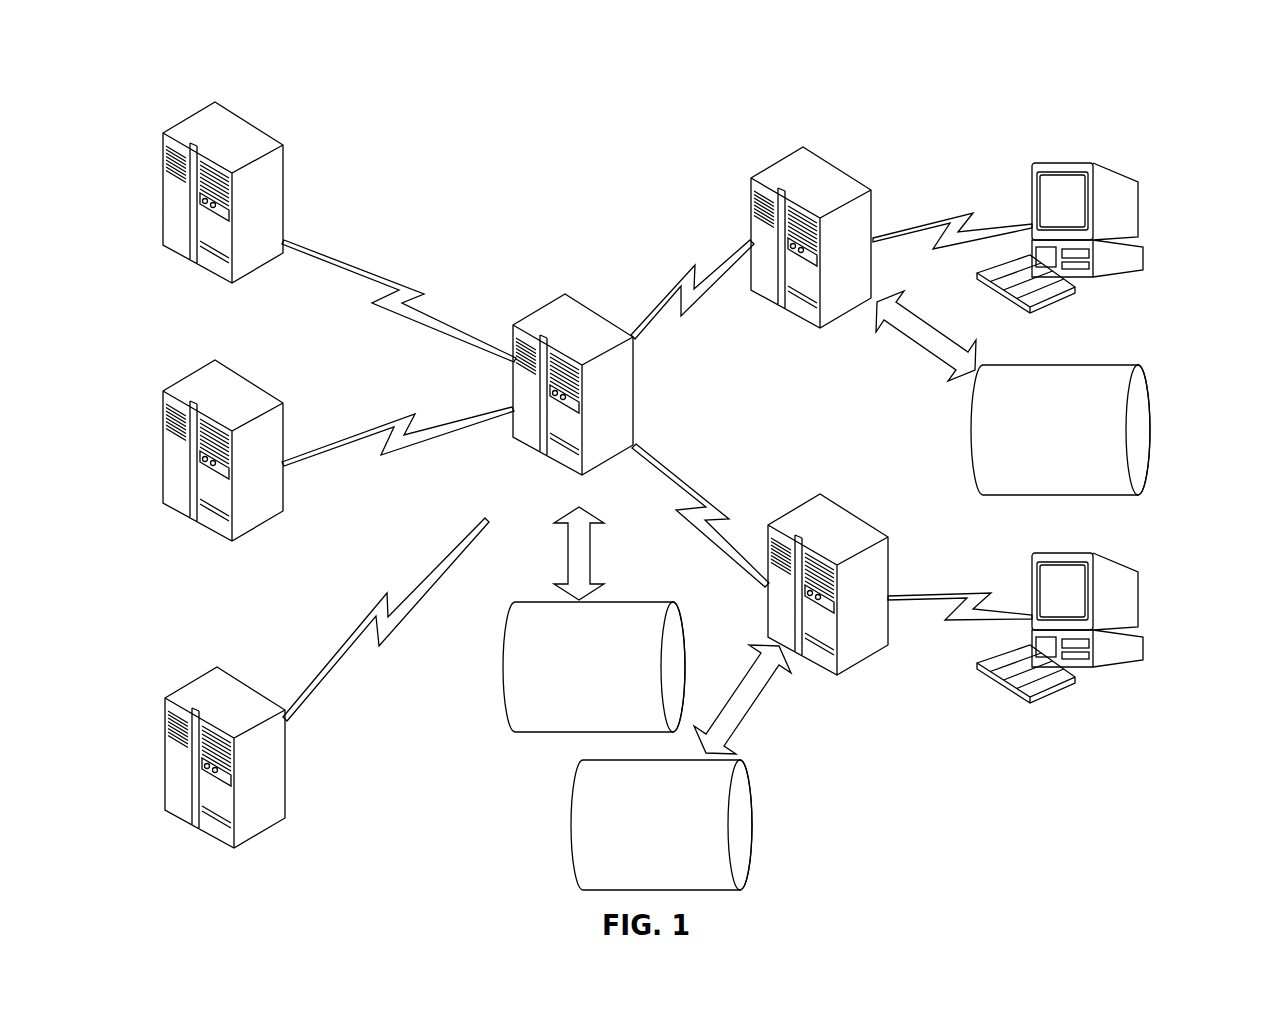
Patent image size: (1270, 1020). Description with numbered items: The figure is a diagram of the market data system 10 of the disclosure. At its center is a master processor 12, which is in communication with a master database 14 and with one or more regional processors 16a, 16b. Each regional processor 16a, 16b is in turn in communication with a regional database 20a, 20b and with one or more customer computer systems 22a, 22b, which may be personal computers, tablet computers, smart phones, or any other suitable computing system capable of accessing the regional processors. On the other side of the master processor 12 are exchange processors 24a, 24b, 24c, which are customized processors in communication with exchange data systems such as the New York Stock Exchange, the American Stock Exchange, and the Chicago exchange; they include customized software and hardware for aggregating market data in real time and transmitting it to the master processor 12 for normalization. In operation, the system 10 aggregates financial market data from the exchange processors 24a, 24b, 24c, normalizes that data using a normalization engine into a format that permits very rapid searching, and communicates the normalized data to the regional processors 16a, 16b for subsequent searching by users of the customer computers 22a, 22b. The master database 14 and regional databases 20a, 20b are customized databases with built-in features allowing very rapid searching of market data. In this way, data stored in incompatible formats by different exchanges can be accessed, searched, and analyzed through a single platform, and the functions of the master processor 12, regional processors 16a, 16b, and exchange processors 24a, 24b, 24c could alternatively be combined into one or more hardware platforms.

The system 10 is at (240, 47).
The master processor 12 is at (578, 305).
The master database 14 is at (623, 602).
The regional processor 16a is at (820, 155).
The regional processor 16b is at (832, 505).
The regional database 20a is at (1138, 433).
The regional database 20b is at (742, 822).
The customer computer system 22a is at (1088, 163).
The customer computer system 22b is at (1110, 553).
The exchange processor 24a is at (257, 125).
The exchange processor 24b is at (268, 390).
The exchange processor 24c is at (235, 673).